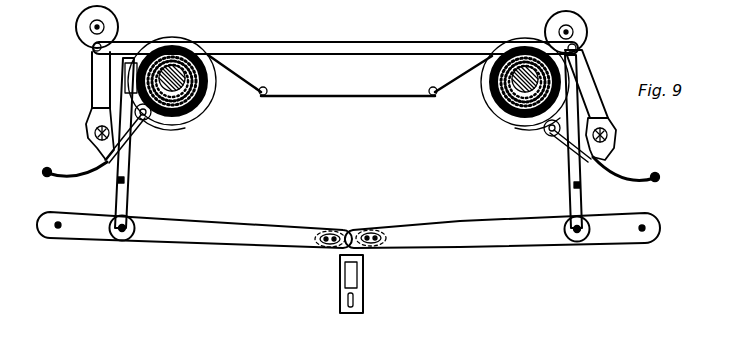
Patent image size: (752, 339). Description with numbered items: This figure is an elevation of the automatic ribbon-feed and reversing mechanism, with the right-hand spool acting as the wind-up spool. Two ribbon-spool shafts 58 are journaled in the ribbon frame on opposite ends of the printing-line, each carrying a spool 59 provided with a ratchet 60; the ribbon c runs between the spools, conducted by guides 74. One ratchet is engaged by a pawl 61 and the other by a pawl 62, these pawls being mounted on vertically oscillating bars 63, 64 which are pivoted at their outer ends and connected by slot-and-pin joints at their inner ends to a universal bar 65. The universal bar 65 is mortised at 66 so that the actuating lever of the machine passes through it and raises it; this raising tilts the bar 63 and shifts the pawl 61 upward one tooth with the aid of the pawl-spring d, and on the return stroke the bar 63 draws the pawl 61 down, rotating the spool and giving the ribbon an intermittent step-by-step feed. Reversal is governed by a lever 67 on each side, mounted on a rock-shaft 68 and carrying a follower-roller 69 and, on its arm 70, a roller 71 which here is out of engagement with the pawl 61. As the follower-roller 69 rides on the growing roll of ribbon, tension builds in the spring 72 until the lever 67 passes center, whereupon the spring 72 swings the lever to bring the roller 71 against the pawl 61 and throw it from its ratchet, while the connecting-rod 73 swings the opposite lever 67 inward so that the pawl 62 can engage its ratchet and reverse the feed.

The ribbon-spool shaft 58 is at (210, 99).
The spool 59 is at (206, 102).
The ratchet 60 is at (203, 120).
The pawl 61 is at (574, 176).
The pawl 62 is at (136, 143).
The vertically oscillating bar 63 is at (487, 230).
The vertically oscillating bar 64 is at (194, 230).
The universal bar 65 is at (340, 278).
The mortise 66 is at (355, 276).
The lever 67 is at (354, 84).
The rock-shaft 68 is at (95, 133).
The follower-roller 69 is at (119, 27).
The arm 70 is at (117, 133).
The roller 71 is at (151, 118).
The spring 72 is at (351, 177).
The connecting-rod 73 is at (335, 67).
The guide 74 is at (266, 90).
The ribbon c is at (348, 89).
The pawl-spring d is at (130, 208).